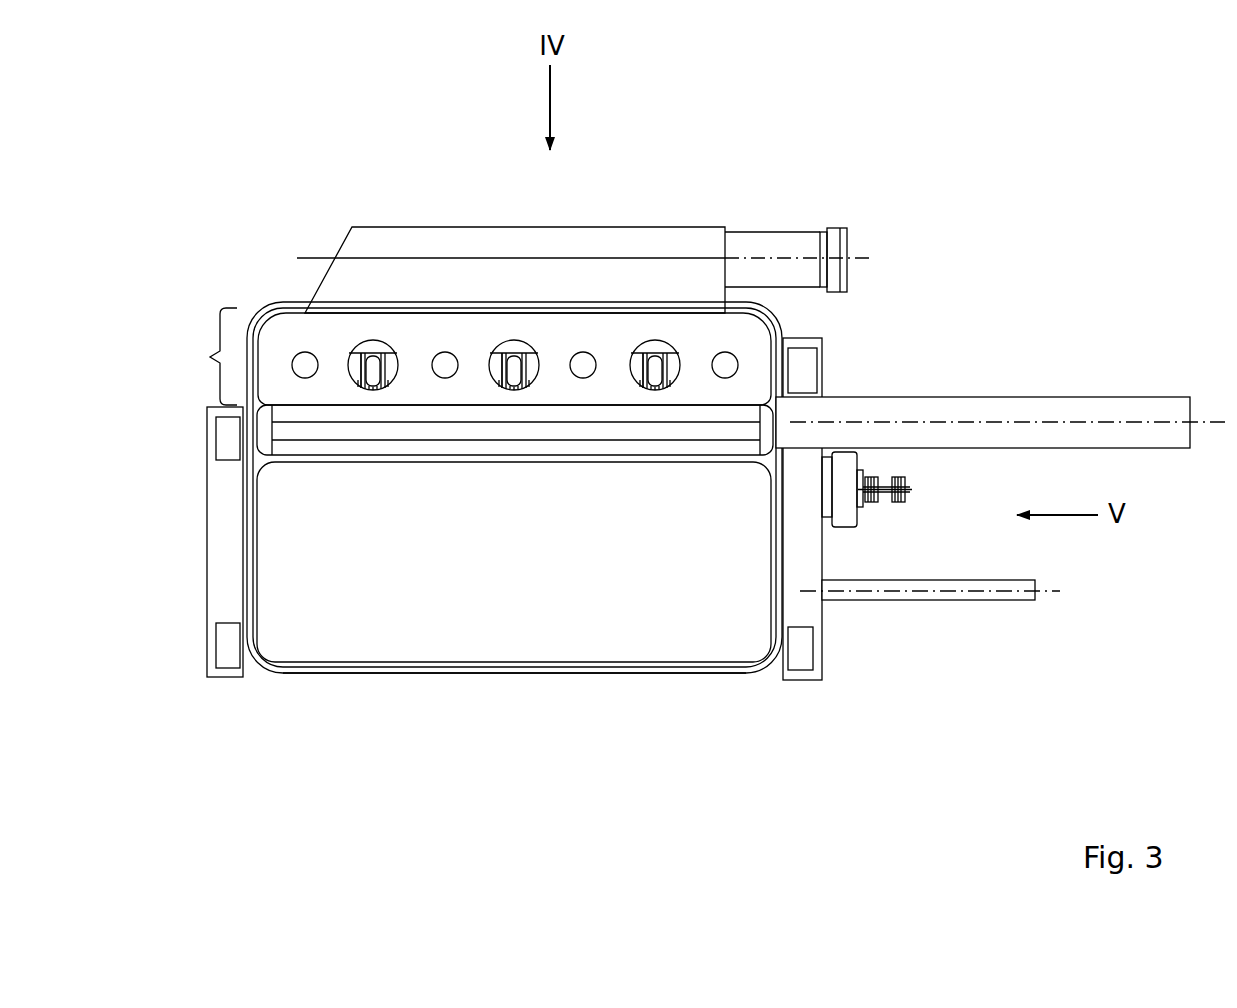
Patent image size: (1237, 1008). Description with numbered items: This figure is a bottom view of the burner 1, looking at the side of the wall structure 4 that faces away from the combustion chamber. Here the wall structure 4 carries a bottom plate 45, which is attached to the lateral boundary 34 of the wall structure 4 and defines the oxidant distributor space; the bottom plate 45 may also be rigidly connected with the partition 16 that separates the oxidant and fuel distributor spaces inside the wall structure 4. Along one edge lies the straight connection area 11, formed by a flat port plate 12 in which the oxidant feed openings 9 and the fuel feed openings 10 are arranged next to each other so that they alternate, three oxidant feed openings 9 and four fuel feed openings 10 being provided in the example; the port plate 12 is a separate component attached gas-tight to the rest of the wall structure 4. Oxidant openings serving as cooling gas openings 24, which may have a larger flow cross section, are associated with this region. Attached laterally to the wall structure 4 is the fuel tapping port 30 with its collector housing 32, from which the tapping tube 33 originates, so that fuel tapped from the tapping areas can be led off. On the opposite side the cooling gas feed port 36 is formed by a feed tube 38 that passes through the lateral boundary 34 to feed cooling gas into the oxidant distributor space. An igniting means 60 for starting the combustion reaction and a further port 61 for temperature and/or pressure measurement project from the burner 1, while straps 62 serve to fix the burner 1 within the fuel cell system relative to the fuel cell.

The burner 1 is at (1078, 252).
The wall structure 4 is at (518, 675).
The oxidant feed openings 9 is at (391, 348).
The fuel feed openings 10 is at (303, 352).
The connection area 11 is at (210, 357).
The port plate 12 is at (282, 340).
The partition 16 is at (425, 673).
The cooling gas opening 24 is at (373, 342).
The fuel tapping port 30 is at (790, 232).
The collector housing 32 is at (360, 240).
The tapping tube 33 is at (770, 240).
The lateral boundary 34 is at (367, 670).
The cooling gas feed port 36 is at (1133, 395).
The feed tube 38 is at (1095, 410).
The bottom plate 45 is at (520, 572).
The igniting means 60 is at (845, 512).
The port 61 is at (970, 593).
The straps 62 is at (232, 437).